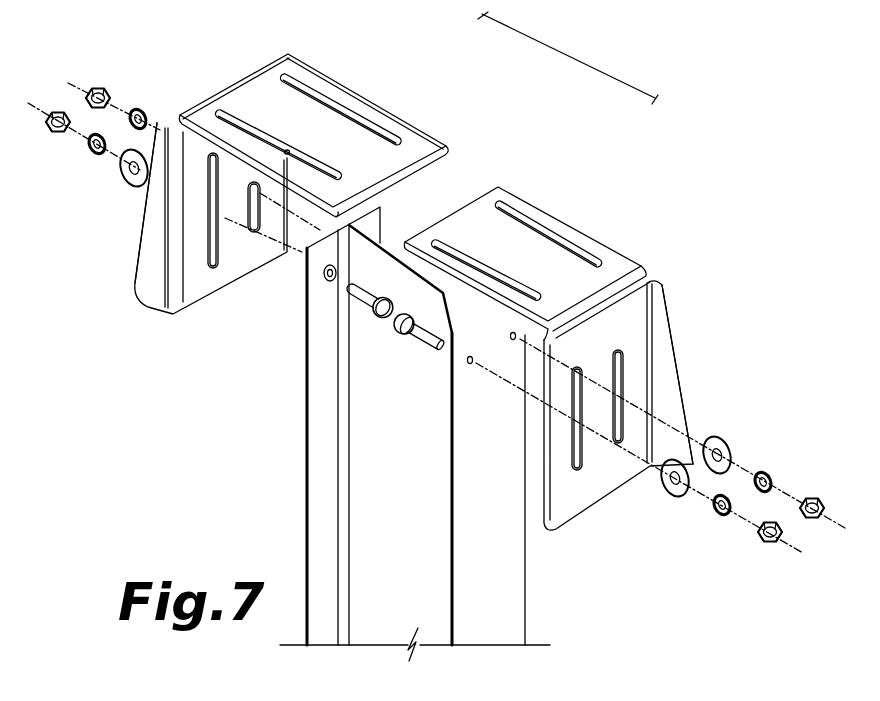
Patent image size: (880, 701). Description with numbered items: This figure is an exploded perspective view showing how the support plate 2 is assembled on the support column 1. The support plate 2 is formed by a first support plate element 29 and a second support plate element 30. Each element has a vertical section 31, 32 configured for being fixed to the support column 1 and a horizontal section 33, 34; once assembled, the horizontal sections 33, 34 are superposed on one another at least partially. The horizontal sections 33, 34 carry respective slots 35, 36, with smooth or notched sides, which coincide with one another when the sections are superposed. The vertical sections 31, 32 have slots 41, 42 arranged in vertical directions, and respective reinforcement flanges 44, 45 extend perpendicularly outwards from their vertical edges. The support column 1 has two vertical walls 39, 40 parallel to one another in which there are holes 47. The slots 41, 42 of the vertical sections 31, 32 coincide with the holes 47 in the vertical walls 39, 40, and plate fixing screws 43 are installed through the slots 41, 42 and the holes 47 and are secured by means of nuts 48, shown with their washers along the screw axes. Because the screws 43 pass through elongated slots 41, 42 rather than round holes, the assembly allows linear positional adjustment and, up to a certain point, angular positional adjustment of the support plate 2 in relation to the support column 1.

The support column 1 is at (427, 434).
The support plate 2 is at (568, 58).
The first support plate element 29 is at (306, 190).
The second support plate element 30 is at (577, 312).
The vertical section 31 is at (195, 238).
The vertical section 32 is at (647, 405).
The horizontal section 33 is at (313, 128).
The horizontal section 34 is at (527, 263).
The slot 35 is at (313, 90).
The slot 36 is at (567, 240).
The vertical wall 39 is at (325, 472).
The vertical wall 40 is at (505, 592).
The slot 41 is at (211, 272).
The slot 42 is at (623, 377).
The plate fixing screw 43 is at (360, 306).
The reinforcement flange 44 is at (150, 279).
The reinforcement flange 45 is at (668, 397).
The hole 47 is at (325, 284).
The nut 48 is at (96, 88).